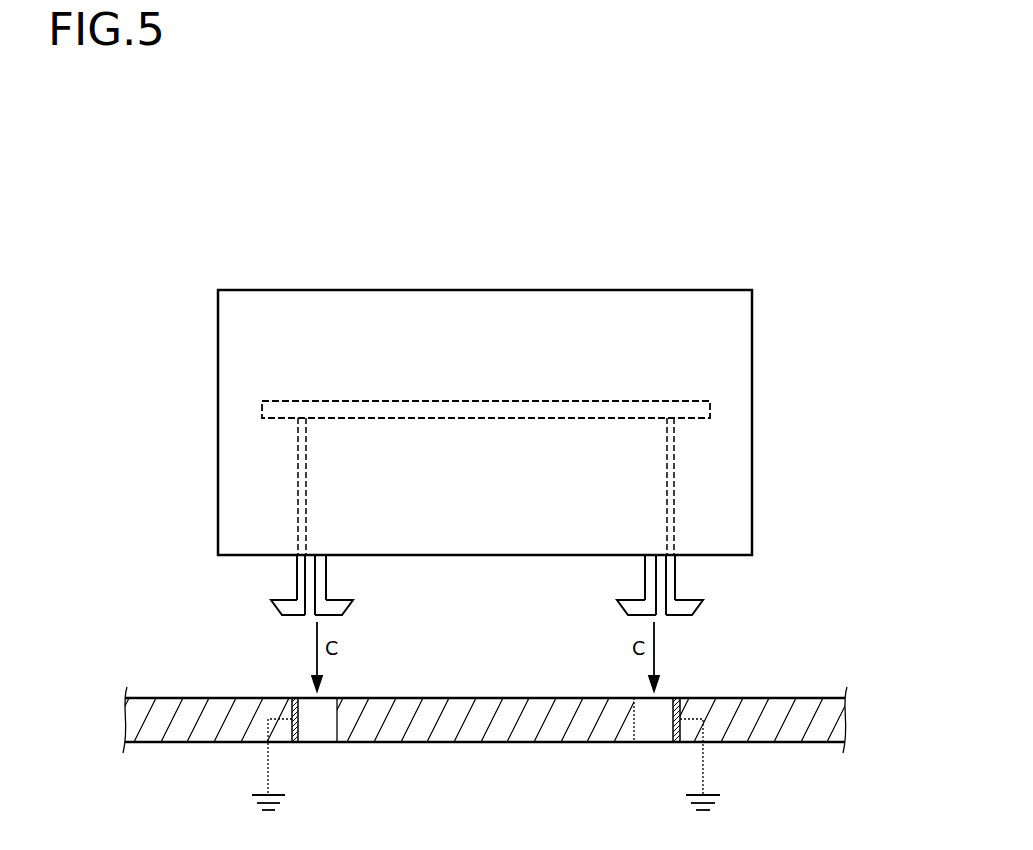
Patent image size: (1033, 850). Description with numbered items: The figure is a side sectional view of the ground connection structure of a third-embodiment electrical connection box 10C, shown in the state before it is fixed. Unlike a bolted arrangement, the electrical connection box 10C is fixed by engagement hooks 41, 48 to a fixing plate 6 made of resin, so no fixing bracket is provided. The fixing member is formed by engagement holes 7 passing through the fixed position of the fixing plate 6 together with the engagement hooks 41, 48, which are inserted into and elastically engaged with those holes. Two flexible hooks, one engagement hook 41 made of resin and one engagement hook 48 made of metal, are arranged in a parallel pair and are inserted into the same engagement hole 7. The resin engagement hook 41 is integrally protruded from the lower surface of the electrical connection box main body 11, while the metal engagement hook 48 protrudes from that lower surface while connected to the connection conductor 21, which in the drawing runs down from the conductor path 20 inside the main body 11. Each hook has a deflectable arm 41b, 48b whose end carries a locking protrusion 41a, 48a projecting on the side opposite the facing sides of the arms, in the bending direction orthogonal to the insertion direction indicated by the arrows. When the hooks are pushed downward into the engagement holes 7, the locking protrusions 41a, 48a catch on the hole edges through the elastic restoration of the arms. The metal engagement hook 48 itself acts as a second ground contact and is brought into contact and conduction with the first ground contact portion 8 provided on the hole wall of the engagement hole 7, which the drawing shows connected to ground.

The electrical connection box 10C is at (695, 290).
The electrical connection box main body 11 is at (633, 312).
The flow path 20 is at (527, 400).
The connection conductor 21 is at (306, 467).
The engagement hook 41 is at (327, 578).
The locking protrusion 41a is at (350, 612).
The arm 41b is at (326, 568).
The engagement hook 48 is at (296, 576).
The locking protrusion 48a is at (275, 612).
The arm 48b is at (297, 568).
The first ground contact portion 8 is at (292, 714).
The engagement hole 7 is at (317, 728).
The fixing plate 6 is at (476, 730).